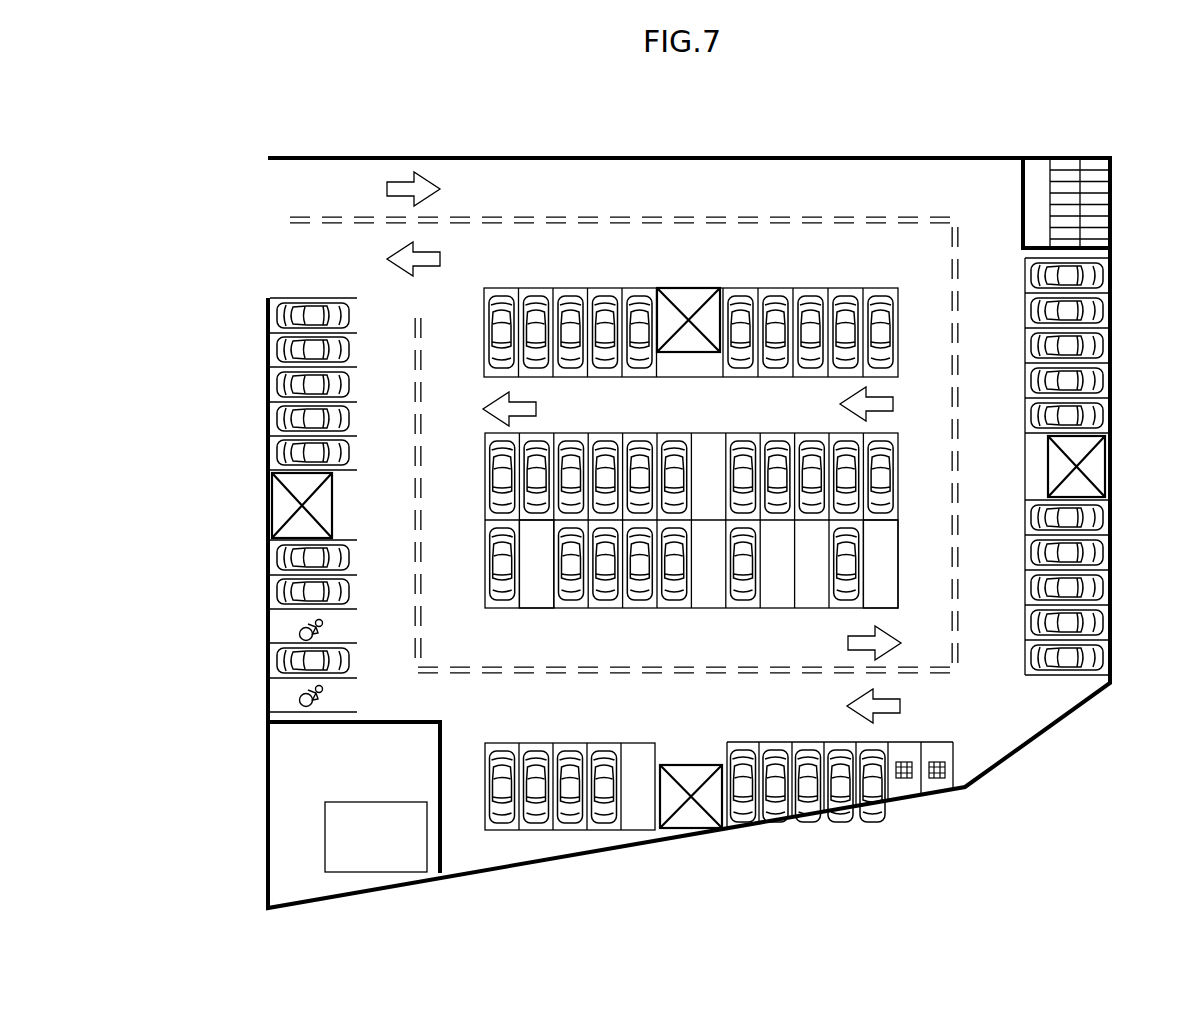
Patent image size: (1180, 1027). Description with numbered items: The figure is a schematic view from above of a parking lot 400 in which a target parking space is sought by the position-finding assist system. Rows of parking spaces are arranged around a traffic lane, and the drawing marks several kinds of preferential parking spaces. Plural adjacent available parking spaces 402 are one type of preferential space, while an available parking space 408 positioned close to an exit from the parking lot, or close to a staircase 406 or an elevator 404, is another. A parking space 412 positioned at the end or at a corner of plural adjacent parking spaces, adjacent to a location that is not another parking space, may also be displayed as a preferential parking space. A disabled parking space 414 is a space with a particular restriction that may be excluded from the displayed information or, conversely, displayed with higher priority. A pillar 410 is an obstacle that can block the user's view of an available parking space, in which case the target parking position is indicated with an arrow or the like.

The parking lot 400 is at (855, 140).
The plural adjacent available parking spaces 402 is at (707, 443).
The elevator 404 is at (370, 861).
The staircase 406 is at (1073, 182).
The available parking space positioned close to an exit 408 is at (537, 598).
The pillar 410 is at (686, 300).
The parking space at the end or corner of plural adjacent parking spaces 412 is at (890, 577).
The disabled parking space 414 is at (278, 625).